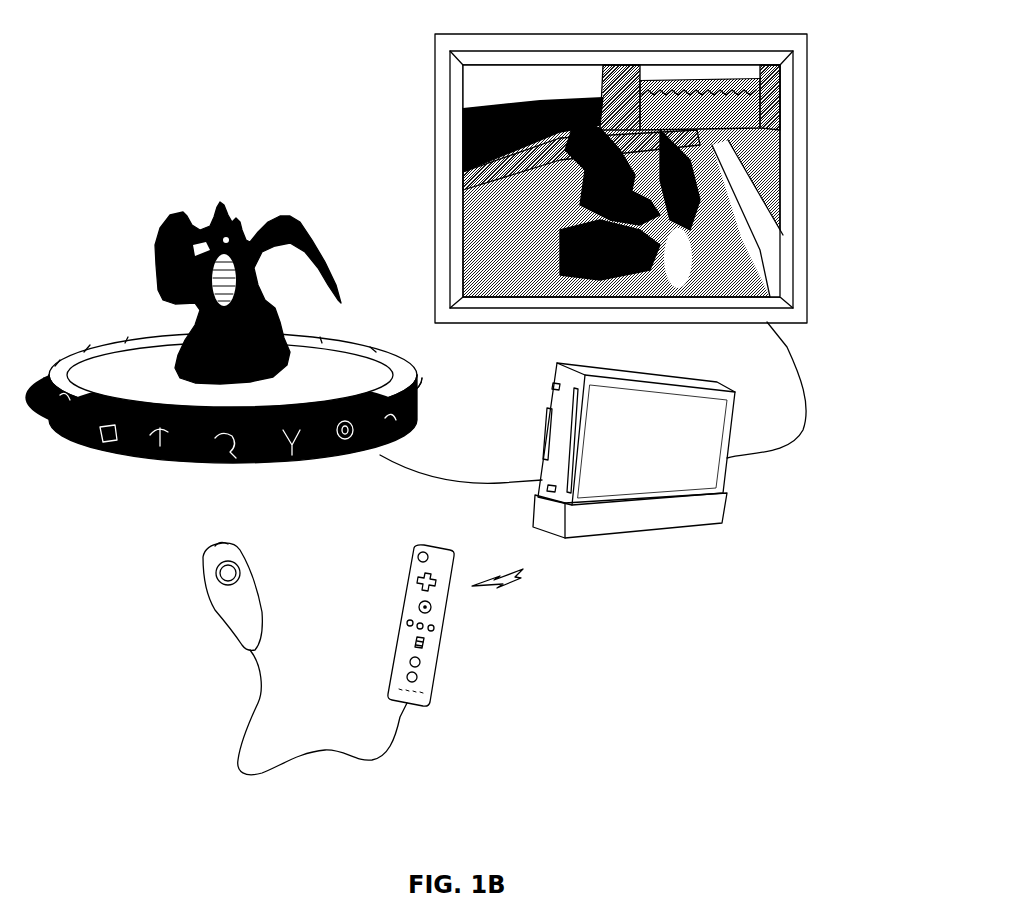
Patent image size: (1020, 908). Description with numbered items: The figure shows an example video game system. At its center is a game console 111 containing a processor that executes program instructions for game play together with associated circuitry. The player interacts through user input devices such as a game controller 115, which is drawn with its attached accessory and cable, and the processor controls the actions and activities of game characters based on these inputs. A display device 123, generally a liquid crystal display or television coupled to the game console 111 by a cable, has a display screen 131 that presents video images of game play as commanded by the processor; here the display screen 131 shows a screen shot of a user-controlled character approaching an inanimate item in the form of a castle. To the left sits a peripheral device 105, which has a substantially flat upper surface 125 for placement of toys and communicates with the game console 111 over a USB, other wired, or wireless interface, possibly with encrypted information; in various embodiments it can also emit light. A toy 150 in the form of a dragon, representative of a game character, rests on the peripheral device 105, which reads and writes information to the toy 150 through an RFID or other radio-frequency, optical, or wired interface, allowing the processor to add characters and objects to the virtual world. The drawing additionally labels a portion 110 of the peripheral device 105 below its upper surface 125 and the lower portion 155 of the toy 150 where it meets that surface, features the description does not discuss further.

The peripheral device 105 is at (160, 462).
The decorative band of portal 110 is at (240, 452).
The game console 111 is at (713, 523).
The game controller 115 is at (440, 615).
The display device 123 is at (808, 307).
The top surface of portal 125 is at (127, 372).
The display screen 131 is at (778, 155).
The toy 150 is at (167, 203).
The base of toy figure 155 is at (283, 373).